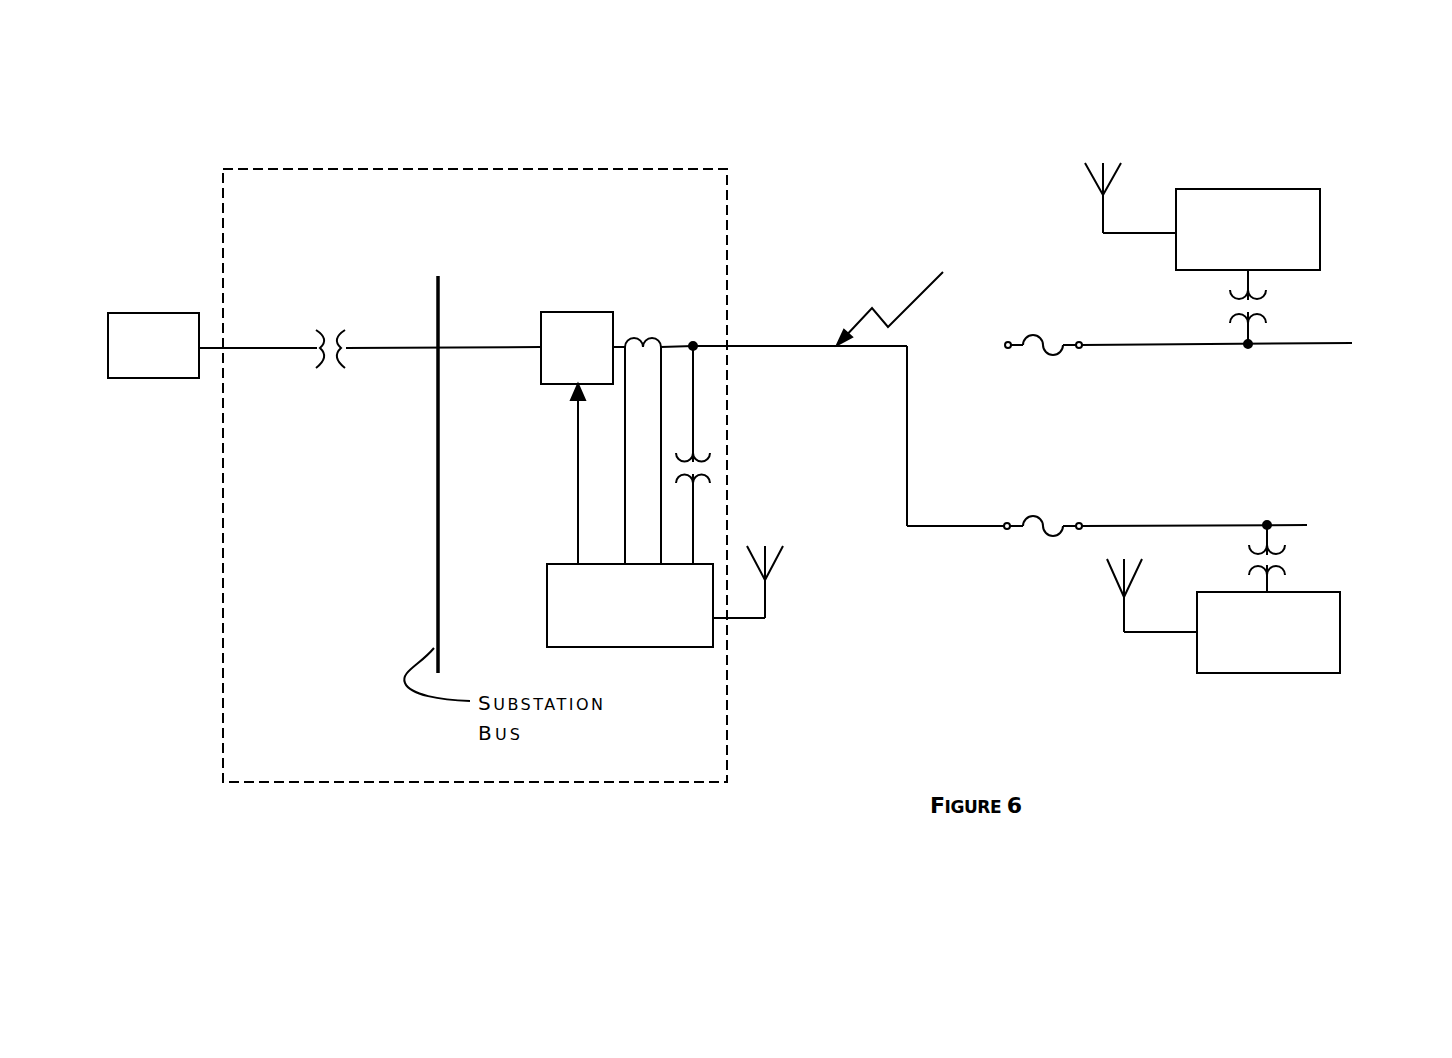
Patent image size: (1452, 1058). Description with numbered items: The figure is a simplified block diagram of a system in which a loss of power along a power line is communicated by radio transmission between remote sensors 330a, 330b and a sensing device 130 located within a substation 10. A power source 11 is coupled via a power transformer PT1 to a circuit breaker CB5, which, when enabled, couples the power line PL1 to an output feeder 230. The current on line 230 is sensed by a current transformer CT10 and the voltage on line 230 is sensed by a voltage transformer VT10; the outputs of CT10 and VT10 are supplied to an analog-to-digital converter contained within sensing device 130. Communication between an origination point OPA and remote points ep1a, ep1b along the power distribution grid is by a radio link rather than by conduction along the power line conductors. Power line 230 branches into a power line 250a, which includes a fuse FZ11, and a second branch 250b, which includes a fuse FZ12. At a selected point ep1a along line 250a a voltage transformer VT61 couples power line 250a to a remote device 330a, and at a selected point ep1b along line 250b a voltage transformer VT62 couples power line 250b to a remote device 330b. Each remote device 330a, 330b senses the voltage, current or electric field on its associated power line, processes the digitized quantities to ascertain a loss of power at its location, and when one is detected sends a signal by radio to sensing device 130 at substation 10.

The power source 11 is at (128, 313).
The power transformer PT1 is at (324, 329).
The power line PL1 is at (480, 348).
The circuit breaker CB5 is at (558, 320).
The current transformer CT10 is at (653, 436).
The origination point OPA is at (696, 344).
The output feeder 230 is at (757, 347).
The voltage transformer VT10 is at (712, 473).
The sensing device 130 is at (615, 647).
The substation 10 is at (253, 773).
The fuse FZ11 is at (1043, 326).
The fuse FZ12 is at (1043, 544).
The power line 250a is at (1133, 344).
The second branch 250b is at (1135, 526).
The voltage transformer VT61 is at (1294, 307).
The voltage transformer VT62 is at (1316, 558).
The selected point ep1a is at (1250, 346).
The selected point ep1b is at (1267, 523).
The remote sensor 330a is at (1320, 243).
The remote sensor 330b is at (1317, 660).